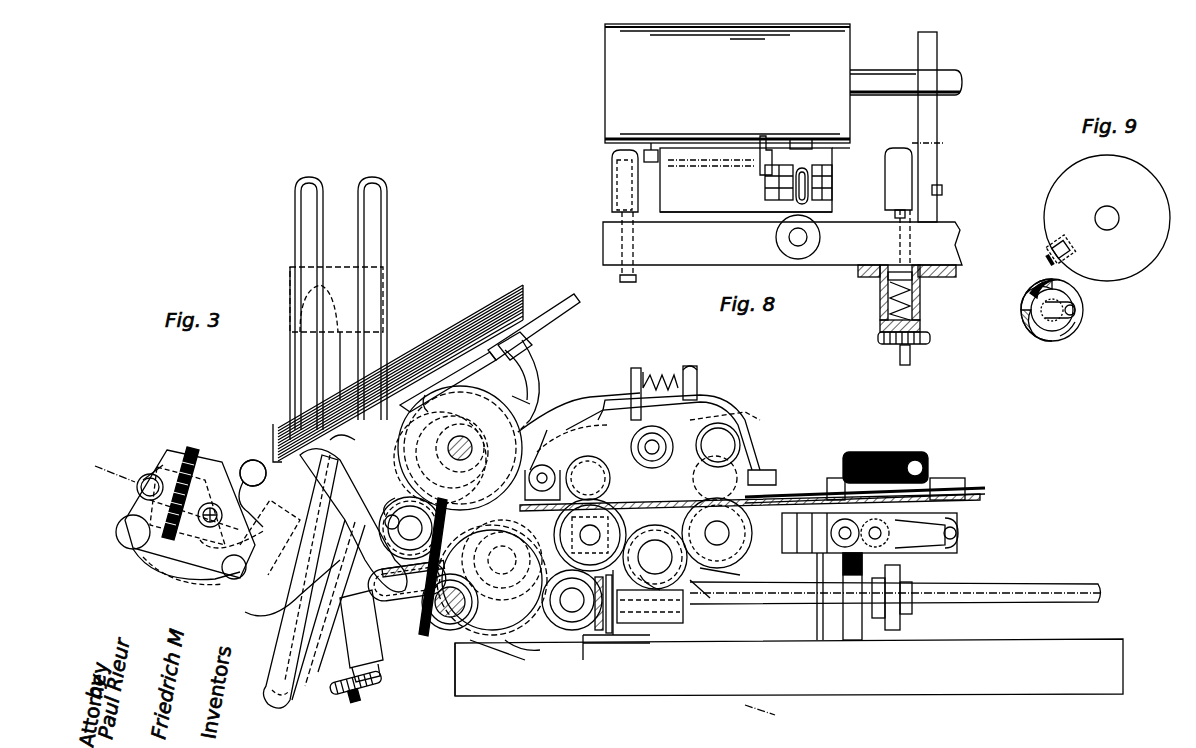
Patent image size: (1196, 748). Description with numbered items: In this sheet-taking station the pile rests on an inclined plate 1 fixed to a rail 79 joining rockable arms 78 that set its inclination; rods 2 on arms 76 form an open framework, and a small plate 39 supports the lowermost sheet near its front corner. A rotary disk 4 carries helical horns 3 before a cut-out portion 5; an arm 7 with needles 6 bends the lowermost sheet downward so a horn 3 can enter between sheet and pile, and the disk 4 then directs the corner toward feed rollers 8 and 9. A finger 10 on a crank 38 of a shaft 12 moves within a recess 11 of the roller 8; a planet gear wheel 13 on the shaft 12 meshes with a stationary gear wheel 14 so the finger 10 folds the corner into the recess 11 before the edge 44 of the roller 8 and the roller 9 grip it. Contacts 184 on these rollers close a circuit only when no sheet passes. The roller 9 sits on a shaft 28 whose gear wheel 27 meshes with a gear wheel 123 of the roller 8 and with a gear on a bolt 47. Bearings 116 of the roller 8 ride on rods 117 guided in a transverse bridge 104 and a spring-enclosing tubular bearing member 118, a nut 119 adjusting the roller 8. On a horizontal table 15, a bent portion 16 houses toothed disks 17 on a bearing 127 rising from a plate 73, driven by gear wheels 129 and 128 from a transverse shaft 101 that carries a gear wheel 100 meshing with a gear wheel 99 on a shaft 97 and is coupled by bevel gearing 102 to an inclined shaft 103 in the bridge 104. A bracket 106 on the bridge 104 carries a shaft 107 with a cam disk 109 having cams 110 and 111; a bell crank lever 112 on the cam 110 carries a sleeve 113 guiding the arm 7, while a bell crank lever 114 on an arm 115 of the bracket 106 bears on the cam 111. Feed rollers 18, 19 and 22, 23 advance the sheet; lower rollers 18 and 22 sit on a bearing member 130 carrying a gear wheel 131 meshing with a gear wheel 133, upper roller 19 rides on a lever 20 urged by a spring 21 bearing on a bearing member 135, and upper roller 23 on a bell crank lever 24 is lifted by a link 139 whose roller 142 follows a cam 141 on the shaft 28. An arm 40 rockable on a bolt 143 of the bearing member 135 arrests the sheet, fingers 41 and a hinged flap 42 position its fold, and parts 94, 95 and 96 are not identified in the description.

In FIG. 3, the guide plate 1 is at (570, 298).
In FIG. 3, the paper guide loops 2 is at (362, 178).
In FIG. 3, the brush / lever 3 is at (928, 430).
In FIG. 3, the lever arm 4 is at (275, 664).
In FIG. 3, the lever 5 is at (293, 567).
In FIG. 3, the pawl 6 is at (353, 520).
In FIG. 3, the roller 7 is at (259, 491).
In FIG. 8, the roller 8 is at (746, 195).
In FIG. 9, the roller 8 is at (1022, 290).
In FIG. 3, the roller 8 is at (458, 485).
In FIG. 8, the drum / platen 9 is at (607, 92).
In FIG. 9, the drum / platen 9 is at (1046, 200).
In FIG. 3, the drum / platen 9 is at (523, 378).
In FIG. 8, the block 10 is at (800, 139).
In FIG. 8, the axis line 11 is at (838, 150).
In FIG. 9, the axis line 11 is at (1070, 330).
In FIG. 3, the axis line 11 is at (435, 600).
In FIG. 8, the frame 12 is at (735, 168).
In FIG. 8, the pin 13 is at (651, 143).
In FIG. 8, the bolt 14 is at (640, 222).
In FIG. 3, the rail 15 is at (652, 498).
In FIG. 3, the roller 16 is at (470, 485).
In FIG. 3, the roller 17 is at (510, 650).
In FIG. 3, the roller 18 is at (670, 490).
In FIG. 3, the roller 19 is at (618, 490).
In FIG. 3, the roller 20 is at (620, 405).
In FIG. 3, the spring 21 is at (678, 370).
In FIG. 3, the roller 22 is at (745, 548).
In FIG. 3, the roller 23 is at (730, 440).
In FIG. 3, the frame 24 is at (720, 395).
In FIG. 8, the vertical bar 27 is at (937, 48).
In FIG. 8, the shaft 28 is at (962, 84).
In FIG. 3, the shaft 28 is at (530, 406).
In FIG. 8, the bracket 38 is at (766, 136).
In FIG. 9, the bracket 38 is at (1078, 310).
In FIG. 3, the paper stack 39 is at (277, 424).
In FIG. 3, the arm 40 is at (758, 440).
In FIG. 3, the brush bearings 41 is at (834, 478).
In FIG. 3, the rail 42 is at (985, 490).
In FIG. 8, the ring 44 is at (772, 200).
In FIG. 9, the ring 44 is at (1075, 280).
In FIG. 3, the support 47 is at (830, 640).
In FIG. 3, the base plate 73 is at (930, 690).
In FIG. 3, the guide 76 is at (292, 354).
In FIG. 3, the guide 78 is at (532, 362).
In FIG. 3, the guide 79 is at (530, 338).
In FIG. 3, the shaft 94 is at (1040, 590).
In FIG. 3, the housing 95 is at (683, 617).
In FIG. 3, the roller 96 is at (583, 628).
In FIG. 3, the roller 97 is at (570, 612).
In FIG. 3, the bar 99 is at (612, 655).
In FIG. 3, the plate edge 100 is at (465, 655).
In FIG. 3, the hub 101 is at (450, 615).
In FIG. 3, the pin 102 is at (440, 600).
In FIG. 3, the rod 103 is at (326, 610).
In FIG. 8, the base bar / lever 104 is at (605, 250).
In FIG. 3, the base bar / lever 104 is at (394, 621).
In FIG. 3, the link 106 is at (270, 580).
In FIG. 3, the roller 107 is at (220, 520).
In FIG. 3, the frame 109 is at (168, 452).
In FIG. 3, the ratchet 110 is at (214, 442).
In FIG. 3, the roller 111 is at (160, 462).
In FIG. 3, the pin 112 is at (252, 460).
In FIG. 3, the roller 113 is at (255, 565).
In FIG. 3, the link 114 is at (180, 570).
In FIG. 3, the roller 115 is at (140, 548).
In FIG. 8, the post 116 is at (612, 160).
In FIG. 8, the pin 117 is at (636, 282).
In FIG. 8, the spring housing 118 is at (922, 297).
In FIG. 8, the knurled knob 119 is at (878, 338).
In FIG. 3, the knurled knob 119 is at (360, 698).
In FIG. 8, the stop 123 is at (942, 170).
In FIG. 3, the link 127 is at (512, 648).
In FIG. 3, the roller 128 is at (502, 560).
In FIG. 3, the link 129 is at (430, 640).
In FIG. 3, the gear box 130 is at (775, 590).
In FIG. 3, the link 131 is at (740, 572).
In FIG. 3, the link 133 is at (705, 598).
In FIG. 3, the post 135 is at (696, 368).
In FIG. 3, the guide 139 is at (585, 402).
In FIG. 3, the drum surface 141 is at (430, 410).
In FIG. 3, the pawl tip 142 is at (345, 447).
In FIG. 3, the roller 143 is at (570, 458).
In FIG. 8, the grid element 184 is at (795, 185).
In FIG. 9, the grid element 184 is at (1046, 252).